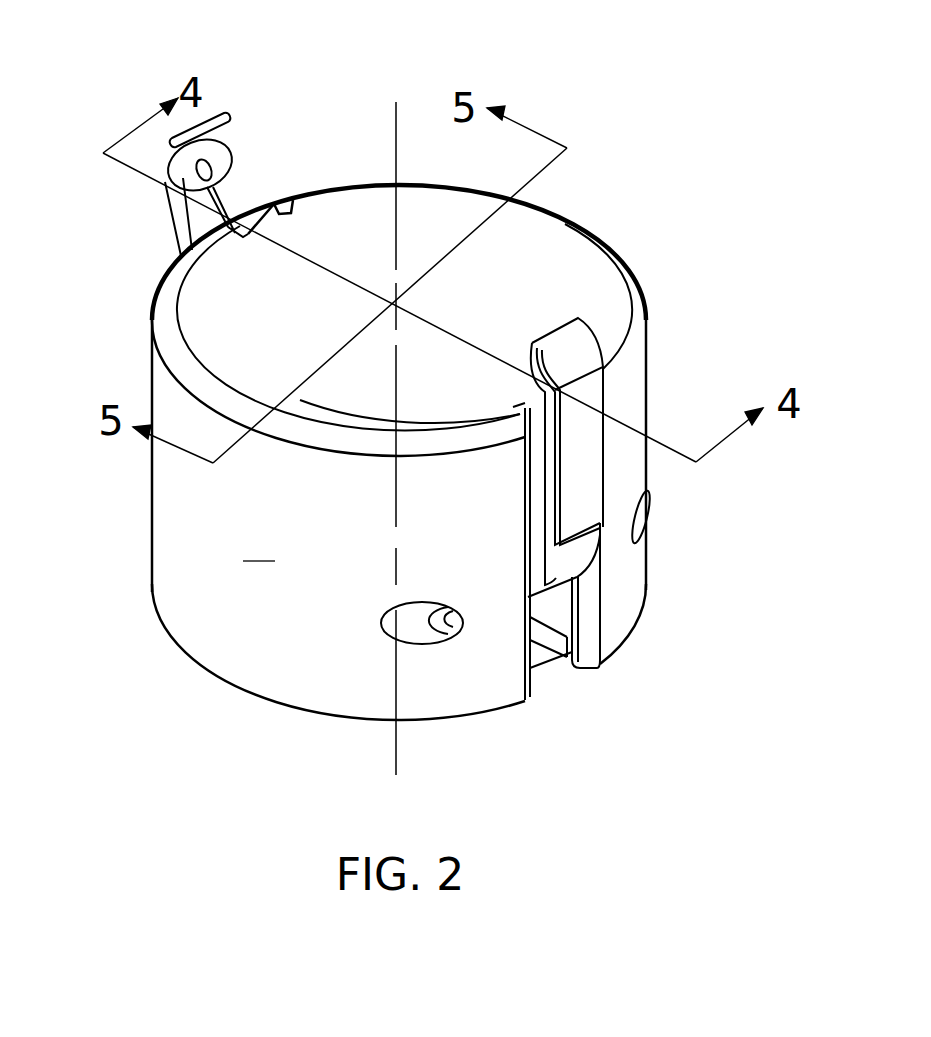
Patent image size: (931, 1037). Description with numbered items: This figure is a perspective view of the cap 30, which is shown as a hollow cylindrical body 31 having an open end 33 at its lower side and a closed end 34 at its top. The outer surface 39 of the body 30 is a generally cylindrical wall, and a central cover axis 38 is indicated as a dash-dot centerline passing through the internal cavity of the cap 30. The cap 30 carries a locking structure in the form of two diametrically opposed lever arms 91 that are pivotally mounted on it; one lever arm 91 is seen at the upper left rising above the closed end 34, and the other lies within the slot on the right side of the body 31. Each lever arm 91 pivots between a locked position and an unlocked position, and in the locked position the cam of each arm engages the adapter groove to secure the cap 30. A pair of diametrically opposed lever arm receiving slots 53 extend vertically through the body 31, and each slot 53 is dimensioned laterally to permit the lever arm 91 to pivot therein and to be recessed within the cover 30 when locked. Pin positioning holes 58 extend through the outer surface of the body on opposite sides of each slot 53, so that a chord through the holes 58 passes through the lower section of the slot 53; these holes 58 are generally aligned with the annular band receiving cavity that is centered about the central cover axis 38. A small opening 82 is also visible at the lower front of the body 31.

The cap 30 is at (600, 162).
The hollow cylindrical body 31 is at (597, 253).
The open end 33 is at (263, 700).
The closed end 34 is at (423, 200).
The central cover axis 38 is at (393, 130).
The outer surface 39 is at (399, 510).
The lever arm receiving slot 53 is at (276, 210).
The pin positioning hole 58 is at (647, 517).
The opening 82 is at (461, 630).
The lever arm 91 is at (578, 458).